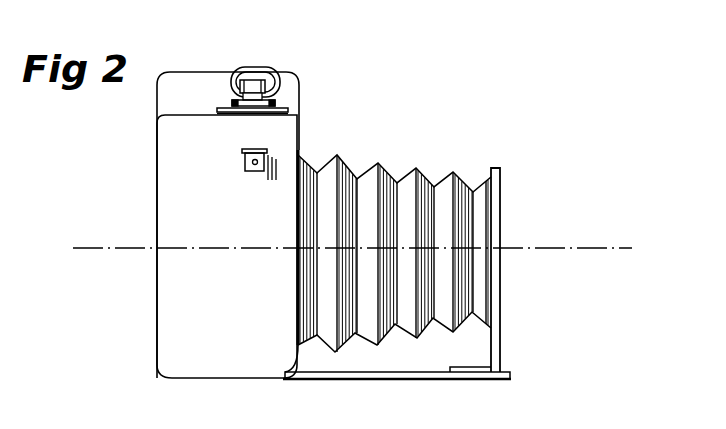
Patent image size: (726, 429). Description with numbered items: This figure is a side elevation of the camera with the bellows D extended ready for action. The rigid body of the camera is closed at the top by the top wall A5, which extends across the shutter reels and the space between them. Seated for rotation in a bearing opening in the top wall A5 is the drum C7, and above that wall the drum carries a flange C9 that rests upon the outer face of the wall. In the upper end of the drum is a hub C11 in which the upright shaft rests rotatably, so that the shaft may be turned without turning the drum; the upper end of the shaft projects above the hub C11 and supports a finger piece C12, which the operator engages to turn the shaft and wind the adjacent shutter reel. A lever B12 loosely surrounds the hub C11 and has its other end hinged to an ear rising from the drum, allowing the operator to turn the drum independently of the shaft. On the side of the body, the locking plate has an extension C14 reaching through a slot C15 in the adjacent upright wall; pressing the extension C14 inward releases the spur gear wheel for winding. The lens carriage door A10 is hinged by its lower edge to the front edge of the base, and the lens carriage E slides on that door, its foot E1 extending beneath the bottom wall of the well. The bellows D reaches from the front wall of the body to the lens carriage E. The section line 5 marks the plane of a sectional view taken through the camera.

The section line 5- 5 is at (355, 244).
The top wall A5 is at (205, 72).
The finger piece C12 is at (272, 70).
The hub C11 is at (268, 97).
The lever B12 is at (275, 103).
The drum C7 is at (290, 112).
The flange C9 is at (218, 111).
The slot C15 is at (245, 152).
The extension C14 is at (248, 170).
The bellows D is at (395, 181).
The lens carriage E is at (500, 293).
The foot E1 is at (470, 368).
The lens carriage door A10 is at (423, 375).